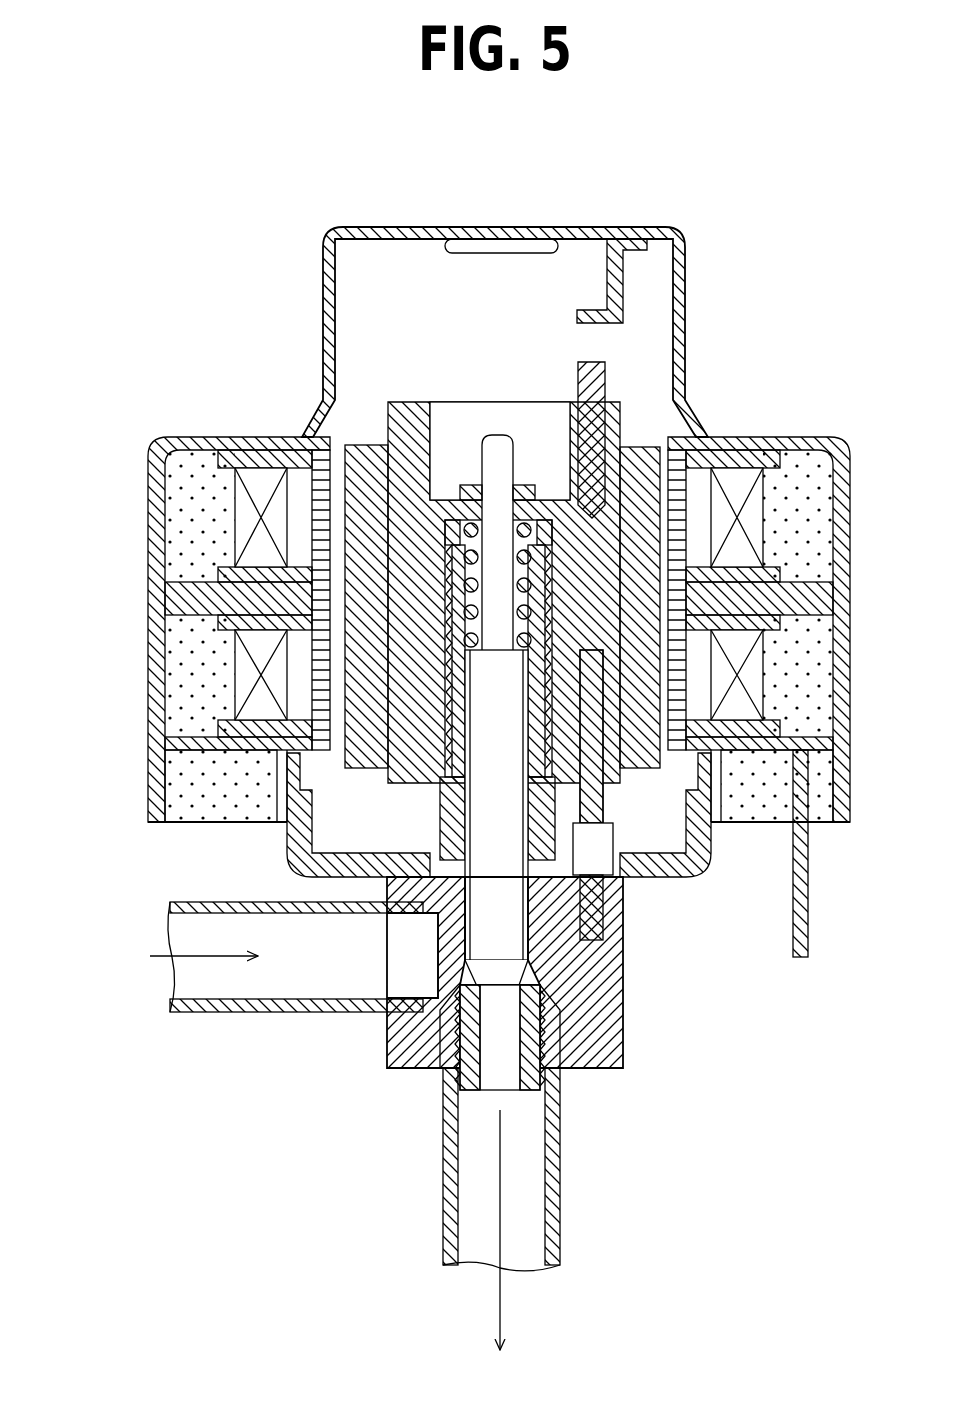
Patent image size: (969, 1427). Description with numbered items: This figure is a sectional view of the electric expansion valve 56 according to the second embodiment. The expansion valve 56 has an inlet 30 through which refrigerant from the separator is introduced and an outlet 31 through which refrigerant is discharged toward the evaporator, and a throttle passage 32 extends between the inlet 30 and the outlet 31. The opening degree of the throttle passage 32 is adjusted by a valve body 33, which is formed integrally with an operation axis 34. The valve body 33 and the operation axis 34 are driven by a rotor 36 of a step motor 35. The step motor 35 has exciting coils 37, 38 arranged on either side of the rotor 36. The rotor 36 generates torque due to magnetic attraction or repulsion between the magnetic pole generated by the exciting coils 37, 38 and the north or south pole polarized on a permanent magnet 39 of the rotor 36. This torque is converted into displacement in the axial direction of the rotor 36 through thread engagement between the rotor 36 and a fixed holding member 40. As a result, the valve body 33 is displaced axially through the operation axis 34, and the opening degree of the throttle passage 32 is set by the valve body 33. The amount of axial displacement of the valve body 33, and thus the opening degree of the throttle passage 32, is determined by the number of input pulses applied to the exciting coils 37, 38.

The inlet 30 is at (183, 980).
The outlet 31 is at (480, 1197).
The throttle passage 32 is at (487, 1087).
The valve body 33 is at (507, 972).
The operation axis 34 is at (485, 832).
The step motor 35 is at (128, 588).
The rotor 36 is at (410, 440).
The exciting coil 37 is at (235, 500).
The exciting coil 38 is at (243, 673).
The permanent magnet 39 is at (368, 458).
The holding member 40 is at (430, 740).
The expansion valve 56 is at (628, 1025).